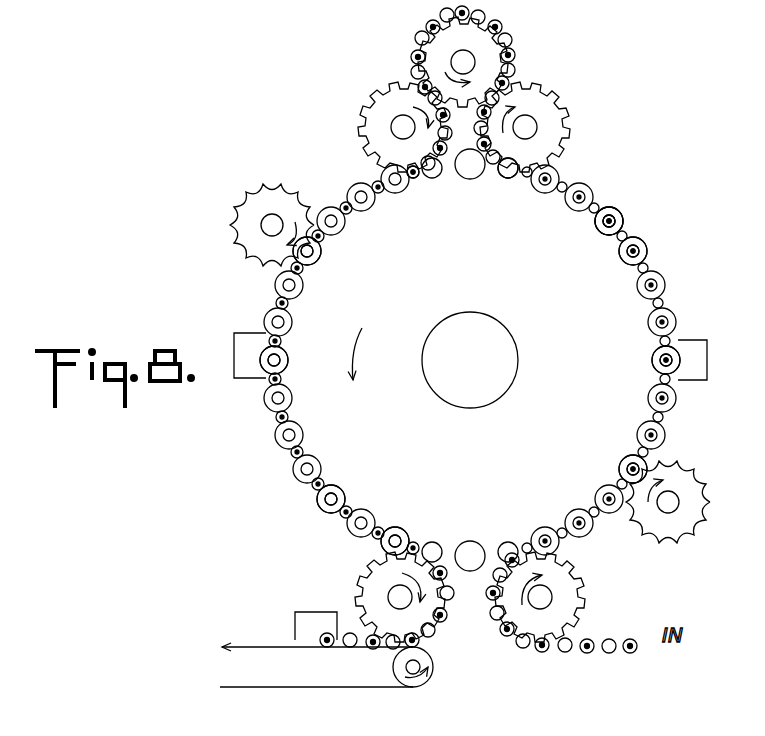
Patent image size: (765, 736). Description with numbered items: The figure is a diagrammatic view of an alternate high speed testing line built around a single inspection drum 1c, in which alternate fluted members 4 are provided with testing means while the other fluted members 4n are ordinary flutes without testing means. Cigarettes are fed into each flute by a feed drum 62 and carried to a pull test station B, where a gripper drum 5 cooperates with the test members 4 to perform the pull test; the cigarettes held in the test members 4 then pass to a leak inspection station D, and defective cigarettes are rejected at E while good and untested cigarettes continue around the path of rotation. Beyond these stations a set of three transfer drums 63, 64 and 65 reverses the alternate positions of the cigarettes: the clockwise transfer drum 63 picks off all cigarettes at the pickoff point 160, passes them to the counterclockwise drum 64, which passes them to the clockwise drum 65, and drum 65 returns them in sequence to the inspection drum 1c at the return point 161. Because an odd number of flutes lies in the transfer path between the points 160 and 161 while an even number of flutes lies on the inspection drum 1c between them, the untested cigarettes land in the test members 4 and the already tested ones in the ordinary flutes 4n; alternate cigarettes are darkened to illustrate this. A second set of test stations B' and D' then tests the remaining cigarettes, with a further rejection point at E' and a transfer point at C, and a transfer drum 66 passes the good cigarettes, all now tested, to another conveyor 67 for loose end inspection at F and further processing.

The inspection drum 1c is at (586, 363).
The fluted members with testing means 4 is at (667, 280).
The fluted members without testing means 4n is at (628, 234).
The gripper drum 5 is at (252, 198).
The feed drum 62 is at (583, 601).
The transfer drum 63 is at (552, 113).
The transfer drum 64 is at (484, 42).
The transfer drum 65 is at (386, 95).
The transfer drum 66 is at (373, 573).
The conveyor 67 is at (303, 686).
The pickoff point 160 is at (505, 178).
The return point 161 is at (416, 178).
The pull test station B is at (604, 468).
The second pull test station B' is at (336, 262).
The station C is at (417, 532).
The leak inspection station D is at (653, 374).
The second leak inspection station D' is at (284, 355).
The reject station E is at (588, 240).
The station E' is at (350, 486).
The loose end inspection station F is at (295, 607).